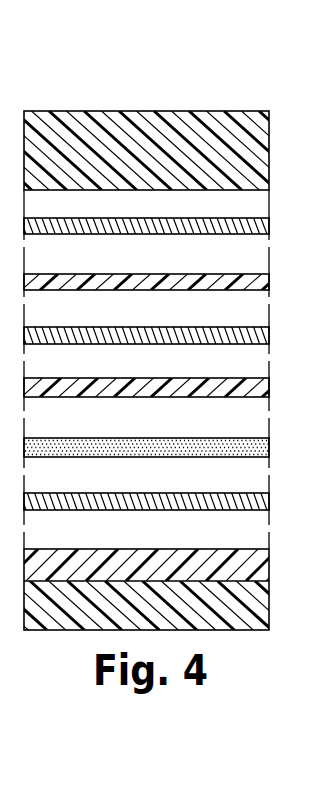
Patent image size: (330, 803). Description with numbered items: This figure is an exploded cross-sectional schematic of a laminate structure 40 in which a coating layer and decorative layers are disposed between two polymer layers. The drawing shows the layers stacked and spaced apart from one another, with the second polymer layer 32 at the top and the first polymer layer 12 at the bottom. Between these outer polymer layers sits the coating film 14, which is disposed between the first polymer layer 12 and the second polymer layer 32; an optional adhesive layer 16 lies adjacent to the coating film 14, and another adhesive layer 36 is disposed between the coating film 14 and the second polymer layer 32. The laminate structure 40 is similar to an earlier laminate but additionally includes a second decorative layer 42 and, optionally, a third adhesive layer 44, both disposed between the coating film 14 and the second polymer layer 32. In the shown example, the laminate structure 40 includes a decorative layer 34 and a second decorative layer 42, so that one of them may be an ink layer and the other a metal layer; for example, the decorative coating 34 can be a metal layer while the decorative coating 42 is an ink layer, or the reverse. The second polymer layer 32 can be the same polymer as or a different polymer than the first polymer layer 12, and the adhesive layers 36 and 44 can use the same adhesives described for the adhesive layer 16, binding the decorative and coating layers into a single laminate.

The laminate structure 40 is at (183, 70).
The second polymer layer 32 is at (253, 142).
The third adhesive layer 44 is at (266, 226).
The second decorative layer 42 is at (265, 285).
The adhesive layer 36 is at (265, 336).
The decorative layer 34 is at (265, 389).
The coating film 14 is at (265, 446).
The adhesive layer 16 is at (264, 501).
The first polymer layer 12 is at (295, 583).